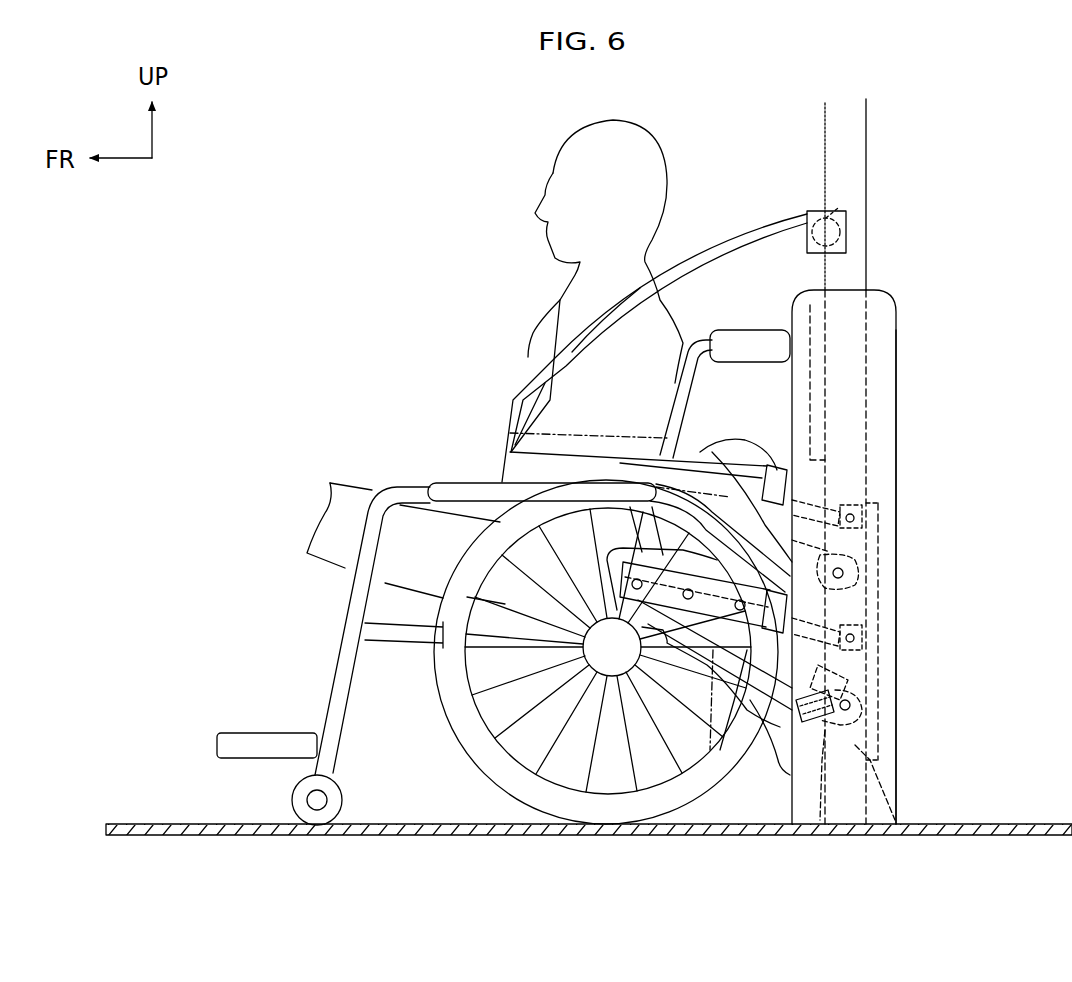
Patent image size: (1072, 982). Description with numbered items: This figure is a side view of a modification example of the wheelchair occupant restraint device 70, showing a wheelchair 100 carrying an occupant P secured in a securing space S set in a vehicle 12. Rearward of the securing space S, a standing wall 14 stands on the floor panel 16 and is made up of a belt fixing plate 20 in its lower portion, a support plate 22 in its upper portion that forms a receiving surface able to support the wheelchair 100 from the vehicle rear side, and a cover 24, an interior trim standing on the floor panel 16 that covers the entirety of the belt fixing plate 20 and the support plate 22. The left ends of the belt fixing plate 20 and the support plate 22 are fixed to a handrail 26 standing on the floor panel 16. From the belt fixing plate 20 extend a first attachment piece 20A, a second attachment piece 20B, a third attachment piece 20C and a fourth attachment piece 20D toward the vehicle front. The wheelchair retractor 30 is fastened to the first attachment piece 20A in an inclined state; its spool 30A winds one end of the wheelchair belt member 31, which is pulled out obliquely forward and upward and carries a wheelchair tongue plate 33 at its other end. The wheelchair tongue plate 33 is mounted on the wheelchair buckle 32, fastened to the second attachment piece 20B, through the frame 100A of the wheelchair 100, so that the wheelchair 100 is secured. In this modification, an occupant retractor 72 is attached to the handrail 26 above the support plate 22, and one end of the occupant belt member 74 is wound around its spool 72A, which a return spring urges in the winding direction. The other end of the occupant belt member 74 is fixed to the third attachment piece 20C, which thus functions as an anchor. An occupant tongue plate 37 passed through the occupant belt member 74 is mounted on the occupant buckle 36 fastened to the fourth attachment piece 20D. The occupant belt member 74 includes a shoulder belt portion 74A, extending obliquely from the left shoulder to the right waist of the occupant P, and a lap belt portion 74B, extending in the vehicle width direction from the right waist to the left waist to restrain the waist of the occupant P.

The vehicle 12 is at (948, 160).
The standing wall 14 is at (900, 298).
The floor panel 16 is at (1028, 822).
The belt fixing plate 20 is at (882, 724).
The first attachment piece 20A is at (895, 820).
The second attachment piece 20B is at (878, 662).
The third attachment piece 20C is at (862, 548).
The fourth attachment piece 20D is at (862, 500).
The support plate 22 is at (810, 306).
The cover 24 is at (897, 372).
The handrail 26 is at (867, 133).
The wheelchair retractor 30 is at (825, 724).
The spool 30A is at (818, 745).
The wheelchair belt member 31 is at (755, 692).
The wheelchair buckle 32 is at (862, 632).
The wheelchair tongue plate 33 is at (730, 487).
The occupant buckle 36 is at (793, 467).
The occupant tongue plate 37 is at (767, 460).
The wheelchair occupant restraint device 70 is at (934, 440).
The occupant retractor 72 is at (806, 208).
The spool 72A is at (847, 215).
The occupant belt member 74 is at (697, 248).
The shoulder belt portion 74A is at (572, 350).
The lap belt portion 74B is at (515, 445).
The wheelchair 100 is at (445, 478).
The frame 100A is at (675, 398).
The occupant P is at (562, 140).
The securing space S is at (258, 583).